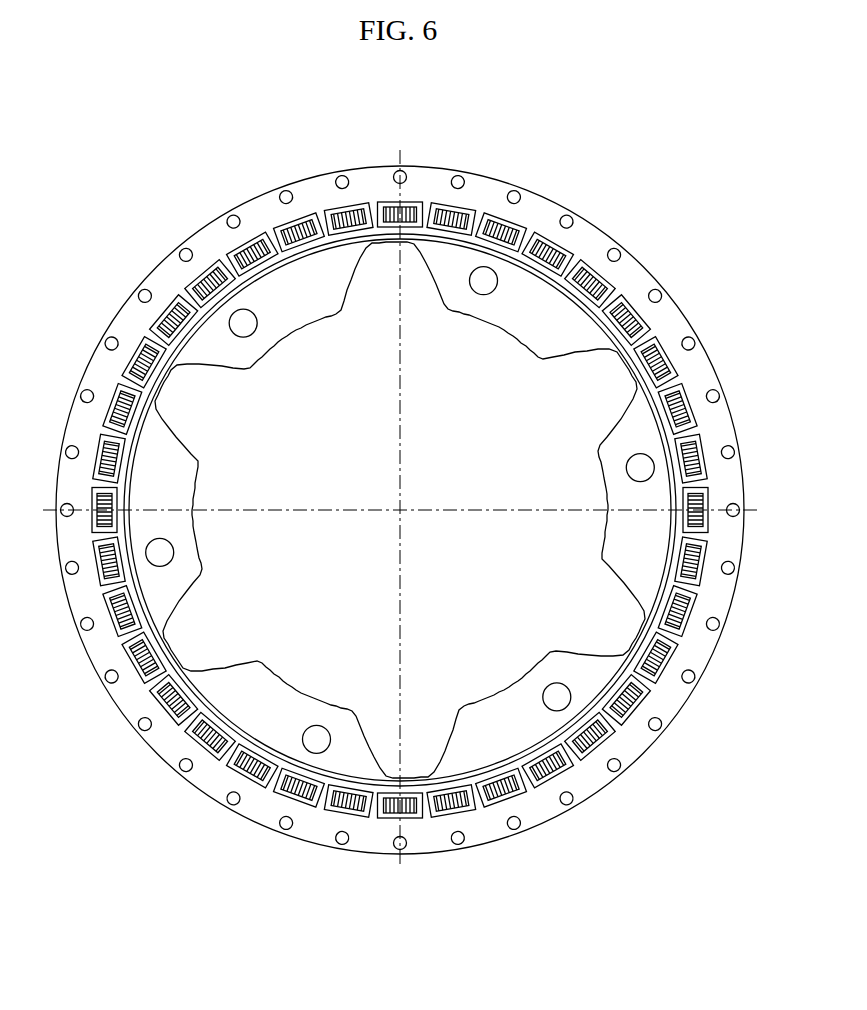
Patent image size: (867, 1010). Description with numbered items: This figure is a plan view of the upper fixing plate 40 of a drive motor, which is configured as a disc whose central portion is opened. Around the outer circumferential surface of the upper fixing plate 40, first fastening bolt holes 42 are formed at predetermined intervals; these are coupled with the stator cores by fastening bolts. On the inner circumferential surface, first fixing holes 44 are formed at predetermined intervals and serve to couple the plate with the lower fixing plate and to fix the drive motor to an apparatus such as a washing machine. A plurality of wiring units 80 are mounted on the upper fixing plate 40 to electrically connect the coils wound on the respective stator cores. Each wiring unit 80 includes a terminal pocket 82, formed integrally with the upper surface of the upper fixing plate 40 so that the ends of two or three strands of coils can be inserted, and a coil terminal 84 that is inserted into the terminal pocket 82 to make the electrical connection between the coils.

The upper fixing plate 40 is at (667, 320).
The first fastening bolt holes 42 is at (659, 294).
The first fixing holes 44 is at (485, 280).
The wiring units 80 is at (412, 193).
The terminal pocket 82 is at (390, 202).
The coil terminal 84 is at (383, 202).